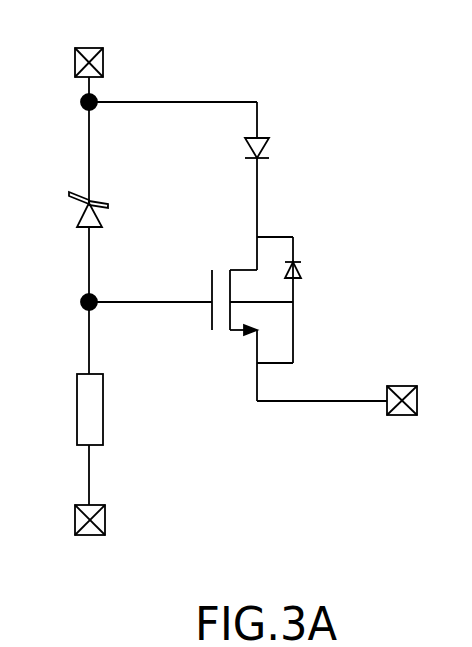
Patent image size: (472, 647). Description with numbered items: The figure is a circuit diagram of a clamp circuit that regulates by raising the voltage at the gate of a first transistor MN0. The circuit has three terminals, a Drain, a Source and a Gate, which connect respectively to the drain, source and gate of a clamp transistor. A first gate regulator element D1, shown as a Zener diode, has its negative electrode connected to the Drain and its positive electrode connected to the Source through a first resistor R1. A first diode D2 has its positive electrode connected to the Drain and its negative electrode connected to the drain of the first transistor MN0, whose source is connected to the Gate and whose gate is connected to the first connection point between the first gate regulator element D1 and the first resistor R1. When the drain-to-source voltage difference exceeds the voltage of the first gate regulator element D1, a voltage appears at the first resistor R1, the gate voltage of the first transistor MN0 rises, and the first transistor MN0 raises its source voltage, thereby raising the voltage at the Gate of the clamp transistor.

The first gate regulator element D1 is at (71, 210).
The first diode D2 is at (271, 152).
The first resistor R1 is at (69, 409).
The first transistor MN0 is at (243, 319).
The drain Drain is at (96, 46).
The source Source is at (106, 535).
The gate Gate is at (403, 417).